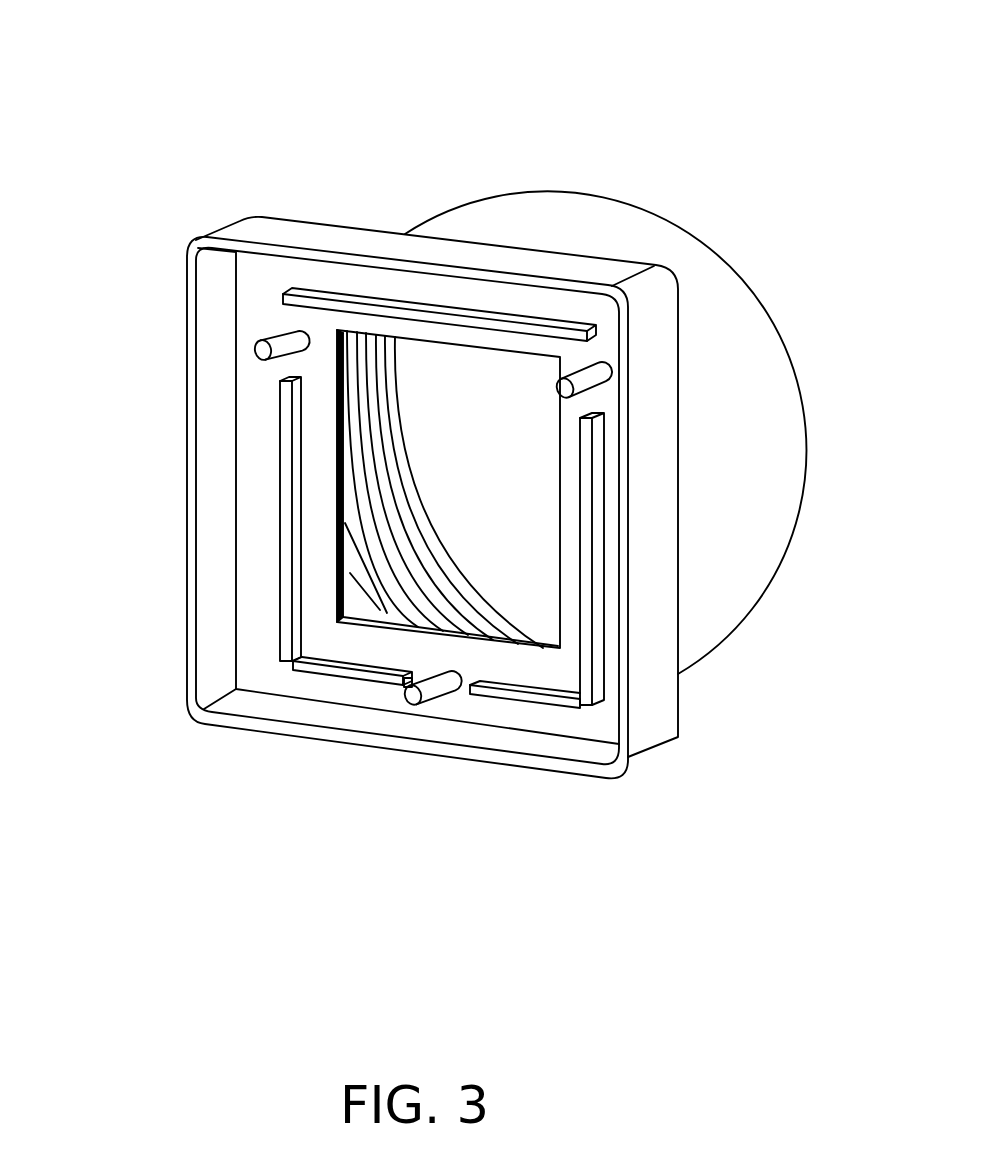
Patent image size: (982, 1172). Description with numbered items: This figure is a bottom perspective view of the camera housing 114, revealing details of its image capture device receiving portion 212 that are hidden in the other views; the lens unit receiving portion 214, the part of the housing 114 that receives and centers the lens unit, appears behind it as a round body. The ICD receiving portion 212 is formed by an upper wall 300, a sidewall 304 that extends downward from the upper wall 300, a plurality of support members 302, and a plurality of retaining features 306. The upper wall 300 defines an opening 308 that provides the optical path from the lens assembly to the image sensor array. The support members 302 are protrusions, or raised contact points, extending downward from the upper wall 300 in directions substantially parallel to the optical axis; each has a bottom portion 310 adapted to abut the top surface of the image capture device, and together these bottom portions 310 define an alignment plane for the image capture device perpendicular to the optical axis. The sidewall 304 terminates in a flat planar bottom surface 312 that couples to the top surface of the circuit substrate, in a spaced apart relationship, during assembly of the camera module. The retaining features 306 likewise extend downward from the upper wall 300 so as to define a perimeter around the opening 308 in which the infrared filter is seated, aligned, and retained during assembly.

The housing 114 is at (98, 101).
The image capture device receiving portion 212 is at (114, 492).
The lens unit receiving portion 214 is at (810, 355).
The upper wall 300 is at (253, 597).
The support members 302 is at (281, 339).
The sidewall 304 is at (311, 237).
The retaining features 306 is at (485, 321).
The opening 308 is at (454, 480).
The bottom portion 310 is at (259, 348).
The flat planar bottom surface 312 is at (192, 281).